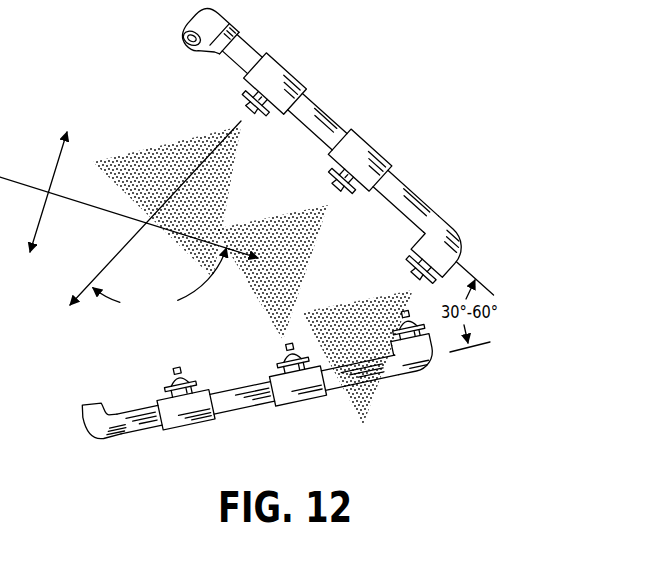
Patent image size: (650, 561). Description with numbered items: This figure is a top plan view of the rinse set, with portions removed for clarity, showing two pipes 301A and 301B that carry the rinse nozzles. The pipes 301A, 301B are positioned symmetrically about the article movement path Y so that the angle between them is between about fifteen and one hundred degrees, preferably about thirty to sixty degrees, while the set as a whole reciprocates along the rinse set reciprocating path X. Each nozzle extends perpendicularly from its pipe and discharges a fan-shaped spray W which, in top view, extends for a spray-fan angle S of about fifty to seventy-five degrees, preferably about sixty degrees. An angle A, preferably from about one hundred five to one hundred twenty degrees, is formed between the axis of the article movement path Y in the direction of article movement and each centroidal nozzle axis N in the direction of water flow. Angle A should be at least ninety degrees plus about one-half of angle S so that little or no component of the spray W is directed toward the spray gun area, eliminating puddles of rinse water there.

The pipe 301A is at (411, 193).
The pipe 301B is at (131, 430).
The centroidal nozzle axis N is at (189, 147).
The spray-fan W is at (296, 204).
The spray-fan angle S is at (272, 213).
The angle A is at (155, 220).
The rinse set reciprocating path X is at (59, 161).
The article movement path Y is at (32, 205).